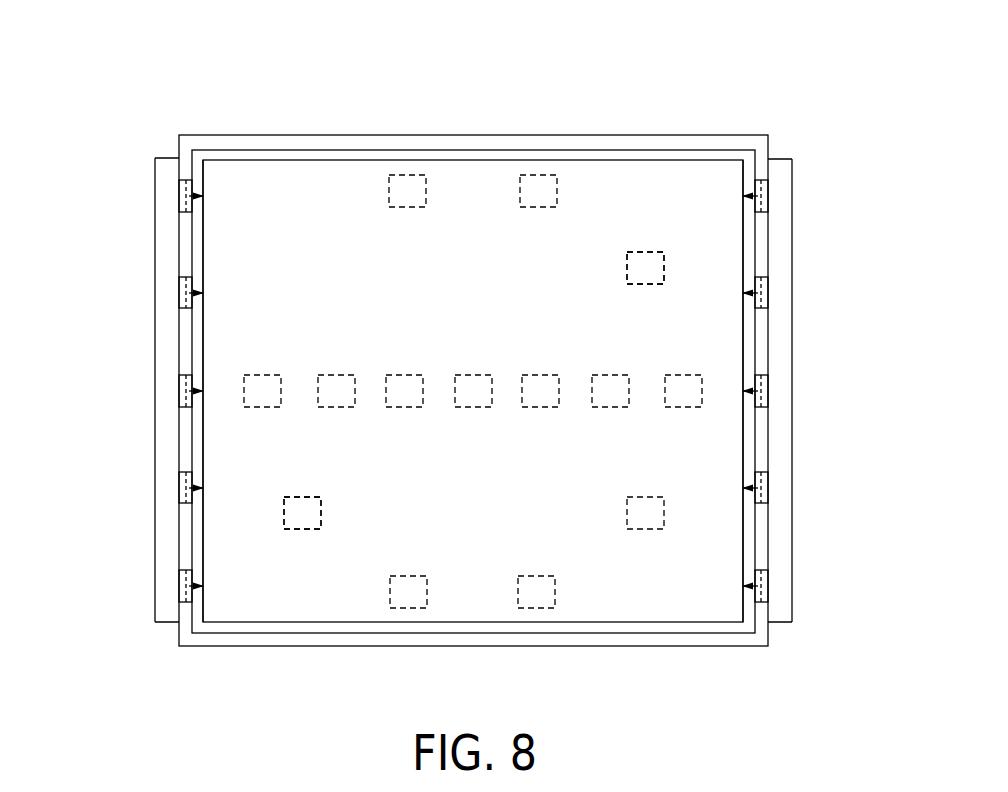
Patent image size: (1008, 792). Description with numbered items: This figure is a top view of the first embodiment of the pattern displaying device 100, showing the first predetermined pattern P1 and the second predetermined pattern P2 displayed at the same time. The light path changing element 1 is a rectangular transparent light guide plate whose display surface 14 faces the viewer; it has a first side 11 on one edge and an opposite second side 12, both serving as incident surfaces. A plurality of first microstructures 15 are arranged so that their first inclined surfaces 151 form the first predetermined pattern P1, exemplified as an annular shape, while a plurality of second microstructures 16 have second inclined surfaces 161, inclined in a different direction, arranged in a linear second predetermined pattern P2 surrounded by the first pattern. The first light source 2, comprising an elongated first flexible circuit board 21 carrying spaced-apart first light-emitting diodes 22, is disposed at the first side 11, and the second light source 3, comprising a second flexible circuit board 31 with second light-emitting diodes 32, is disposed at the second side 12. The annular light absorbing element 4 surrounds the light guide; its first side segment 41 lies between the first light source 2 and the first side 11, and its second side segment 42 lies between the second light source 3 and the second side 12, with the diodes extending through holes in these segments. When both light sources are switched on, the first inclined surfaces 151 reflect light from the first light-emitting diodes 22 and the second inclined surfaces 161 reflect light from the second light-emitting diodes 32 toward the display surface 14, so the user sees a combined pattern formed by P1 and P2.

The pattern displaying device 100 is at (112, 86).
The light path changing element 1 is at (290, 157).
The first side 11 is at (743, 539).
The second side 12 is at (203, 540).
The display surface 14 is at (240, 198).
The first microstructures 15 is at (674, 246).
The first inclined surface 151 is at (648, 268).
The second microstructures 16 is at (318, 378).
The second inclined surface 161 is at (327, 395).
The first light source 2 is at (794, 406).
The first flexible circuit board 21 is at (785, 443).
The first light-emitting diodes 22 is at (757, 483).
The second light source 3 is at (155, 255).
The second flexible circuit board 31 is at (168, 240).
The second light-emitting diodes 32 is at (186, 293).
The light absorbing element 4 is at (359, 128).
The first side segment 41 is at (760, 176).
The second side segment 42 is at (188, 170).
The first predetermined pattern P1 is at (558, 174).
The second predetermined pattern P2 is at (632, 377).